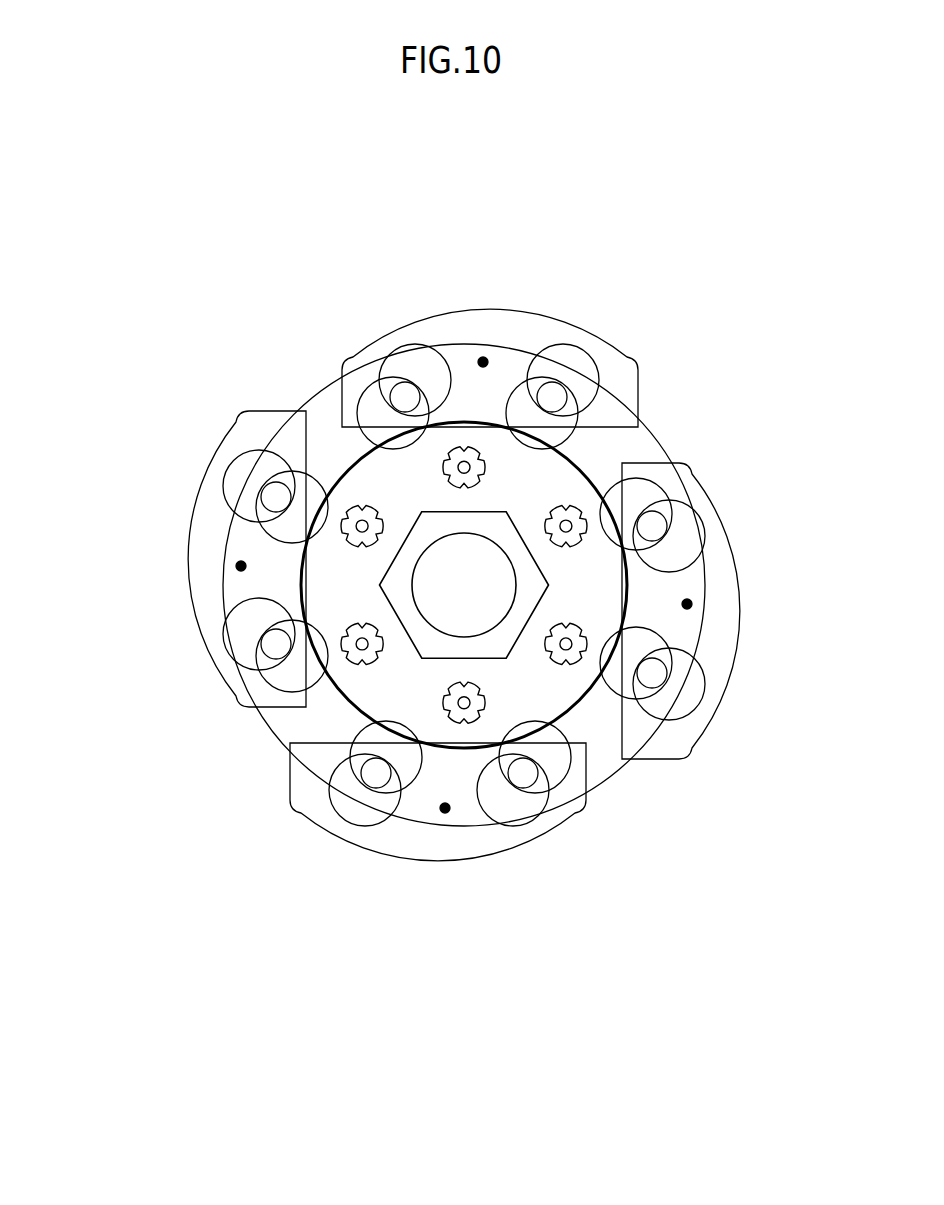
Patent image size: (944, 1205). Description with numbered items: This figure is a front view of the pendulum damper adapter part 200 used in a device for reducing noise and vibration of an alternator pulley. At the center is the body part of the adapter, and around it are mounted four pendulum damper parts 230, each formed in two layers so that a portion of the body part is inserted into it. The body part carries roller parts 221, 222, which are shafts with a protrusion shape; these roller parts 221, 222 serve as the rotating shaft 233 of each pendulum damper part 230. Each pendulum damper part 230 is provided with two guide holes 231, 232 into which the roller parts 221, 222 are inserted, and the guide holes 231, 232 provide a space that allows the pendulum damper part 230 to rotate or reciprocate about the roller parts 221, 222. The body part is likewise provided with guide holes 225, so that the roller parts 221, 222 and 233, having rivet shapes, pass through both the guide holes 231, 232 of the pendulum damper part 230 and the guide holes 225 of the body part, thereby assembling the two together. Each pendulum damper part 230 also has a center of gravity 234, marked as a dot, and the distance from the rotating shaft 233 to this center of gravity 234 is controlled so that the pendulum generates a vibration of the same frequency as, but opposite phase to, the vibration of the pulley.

The pendulum damper adapter part 200 is at (522, 260).
The pendulum damper part 230 is at (365, 350).
The guide holes 225 is at (658, 647).
The guide hole 231 is at (464, 693).
The guide hole 232 is at (518, 825).
The roller part 221 is at (359, 585).
The roller part 222 is at (359, 585).
The rotating shaft 233 is at (275, 502).
The center of gravity 234 is at (688, 603).